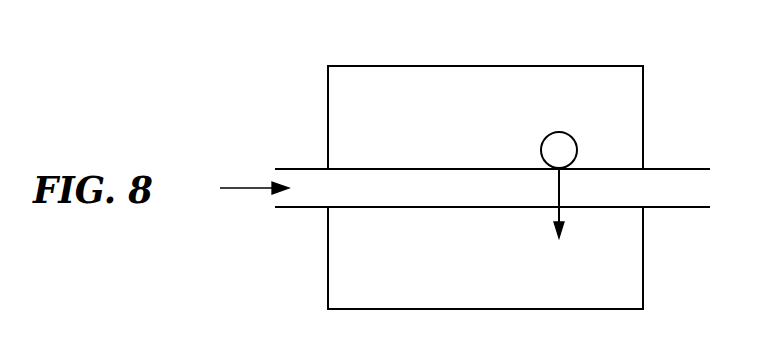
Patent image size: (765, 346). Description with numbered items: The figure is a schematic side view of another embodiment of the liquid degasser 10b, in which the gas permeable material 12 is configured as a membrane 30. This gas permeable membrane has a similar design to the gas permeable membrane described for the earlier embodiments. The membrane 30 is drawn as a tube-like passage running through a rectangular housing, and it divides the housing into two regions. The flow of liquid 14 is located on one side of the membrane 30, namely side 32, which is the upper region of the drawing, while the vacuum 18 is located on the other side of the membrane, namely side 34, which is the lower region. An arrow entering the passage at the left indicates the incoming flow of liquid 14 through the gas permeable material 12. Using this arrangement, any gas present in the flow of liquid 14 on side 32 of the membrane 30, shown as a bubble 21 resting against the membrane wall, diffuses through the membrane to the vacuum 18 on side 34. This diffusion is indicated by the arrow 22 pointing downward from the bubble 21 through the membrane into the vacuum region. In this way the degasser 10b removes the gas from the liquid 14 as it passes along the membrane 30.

The liquid degasser 10b is at (614, 37).
The gas permeable material 12 is at (310, 160).
The flow of liquid 14 is at (627, 99).
The vacuum 18 is at (607, 294).
The bubble 21 is at (541, 148).
The arrow 22 is at (557, 213).
The membrane 30 is at (683, 168).
The side 32 is at (645, 168).
The side 34 is at (673, 208).